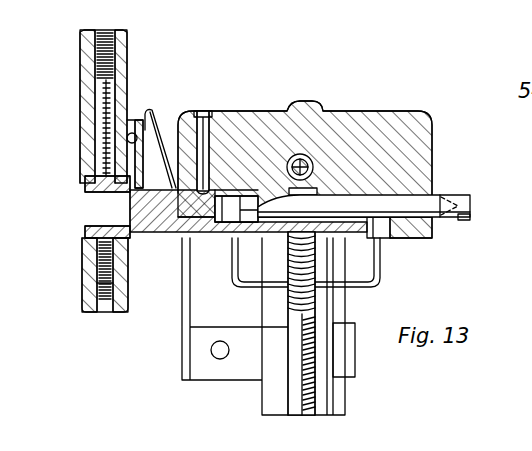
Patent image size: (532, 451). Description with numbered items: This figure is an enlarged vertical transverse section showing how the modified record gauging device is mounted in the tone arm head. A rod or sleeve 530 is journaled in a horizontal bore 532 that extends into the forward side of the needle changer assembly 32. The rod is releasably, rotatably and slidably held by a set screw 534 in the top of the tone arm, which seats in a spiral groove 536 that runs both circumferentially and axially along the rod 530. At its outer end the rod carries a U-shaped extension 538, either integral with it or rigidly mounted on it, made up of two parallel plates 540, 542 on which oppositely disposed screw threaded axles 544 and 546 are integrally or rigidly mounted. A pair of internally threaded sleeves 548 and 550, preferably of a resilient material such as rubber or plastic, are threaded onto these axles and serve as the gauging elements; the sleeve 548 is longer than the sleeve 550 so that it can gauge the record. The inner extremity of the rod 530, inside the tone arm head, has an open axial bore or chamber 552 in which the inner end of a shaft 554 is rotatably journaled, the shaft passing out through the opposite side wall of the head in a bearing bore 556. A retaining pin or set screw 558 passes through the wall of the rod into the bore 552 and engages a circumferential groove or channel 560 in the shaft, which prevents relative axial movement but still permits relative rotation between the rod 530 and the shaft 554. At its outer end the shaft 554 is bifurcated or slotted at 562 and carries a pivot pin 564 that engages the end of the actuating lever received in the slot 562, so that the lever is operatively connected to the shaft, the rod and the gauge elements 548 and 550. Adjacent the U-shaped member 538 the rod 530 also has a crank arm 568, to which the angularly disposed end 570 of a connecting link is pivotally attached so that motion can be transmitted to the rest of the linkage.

The needle changer assembly 32 is at (419, 105).
The rod 530 is at (151, 236).
The horizontal bore 532 is at (224, 188).
The set screw 534 is at (190, 111).
The spiral groove 536 is at (186, 252).
The U-shaped extension 538 is at (133, 210).
The plate 540 is at (92, 190).
The plate 542 is at (90, 232).
The screw threaded axle 544 is at (104, 78).
The screw threaded axle 546 is at (90, 267).
The internally threaded sleeve 548 is at (123, 42).
The internally threaded sleeve 550 is at (88, 290).
The axial bore 552 is at (246, 200).
The shaft 554 is at (404, 208).
The bearing bore 556 is at (419, 240).
The retaining pin 558 is at (248, 242).
The circumferential groove 560 is at (314, 172).
The slot 562 is at (465, 218).
The pivot pin 564 is at (463, 193).
The crank arm 568 is at (137, 158).
The angularly disposed end 570 is at (149, 110).